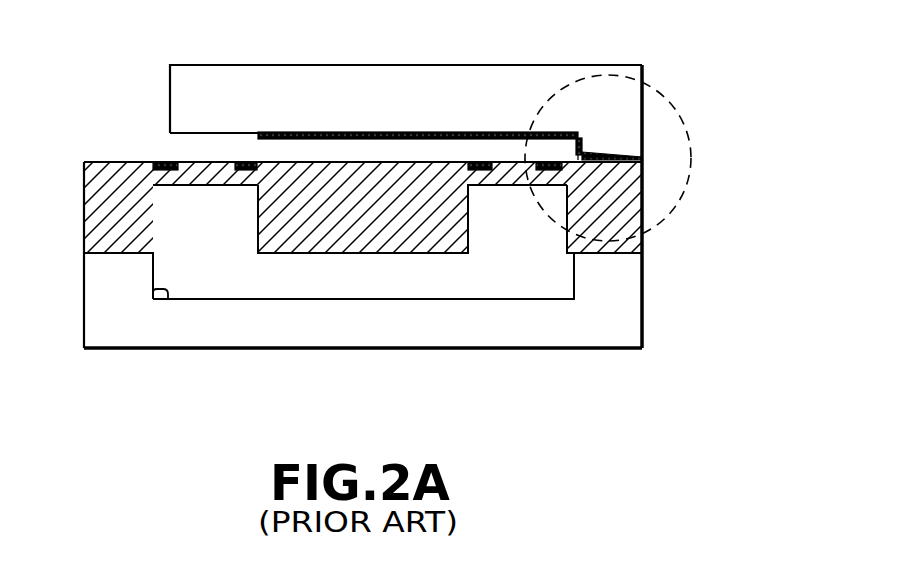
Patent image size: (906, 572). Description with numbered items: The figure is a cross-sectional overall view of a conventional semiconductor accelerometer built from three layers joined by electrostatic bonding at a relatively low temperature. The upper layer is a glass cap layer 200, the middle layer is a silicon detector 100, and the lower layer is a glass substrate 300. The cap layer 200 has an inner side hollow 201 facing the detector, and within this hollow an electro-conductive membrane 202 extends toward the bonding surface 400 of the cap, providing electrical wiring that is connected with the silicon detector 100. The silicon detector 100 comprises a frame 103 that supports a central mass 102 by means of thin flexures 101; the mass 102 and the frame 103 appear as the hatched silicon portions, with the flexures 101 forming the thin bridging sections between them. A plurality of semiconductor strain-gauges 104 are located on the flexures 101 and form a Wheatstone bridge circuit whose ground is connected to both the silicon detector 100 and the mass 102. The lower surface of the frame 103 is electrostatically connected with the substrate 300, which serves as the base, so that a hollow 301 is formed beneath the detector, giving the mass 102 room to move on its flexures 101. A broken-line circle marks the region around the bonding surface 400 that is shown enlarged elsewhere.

The silicon detector 100 is at (442, 190).
The flexures 101 is at (198, 172).
The mass 102 is at (395, 190).
The frame 103 is at (620, 212).
The semiconductor strain-gauges 104 is at (167, 162).
The cap layer 200 is at (457, 120).
The inner side hollow 201 is at (254, 131).
The electro-conductive membrane 202 is at (340, 132).
The substrate 300 is at (336, 236).
The hollow 301 is at (153, 290).
The bonding surface 400 is at (640, 160).